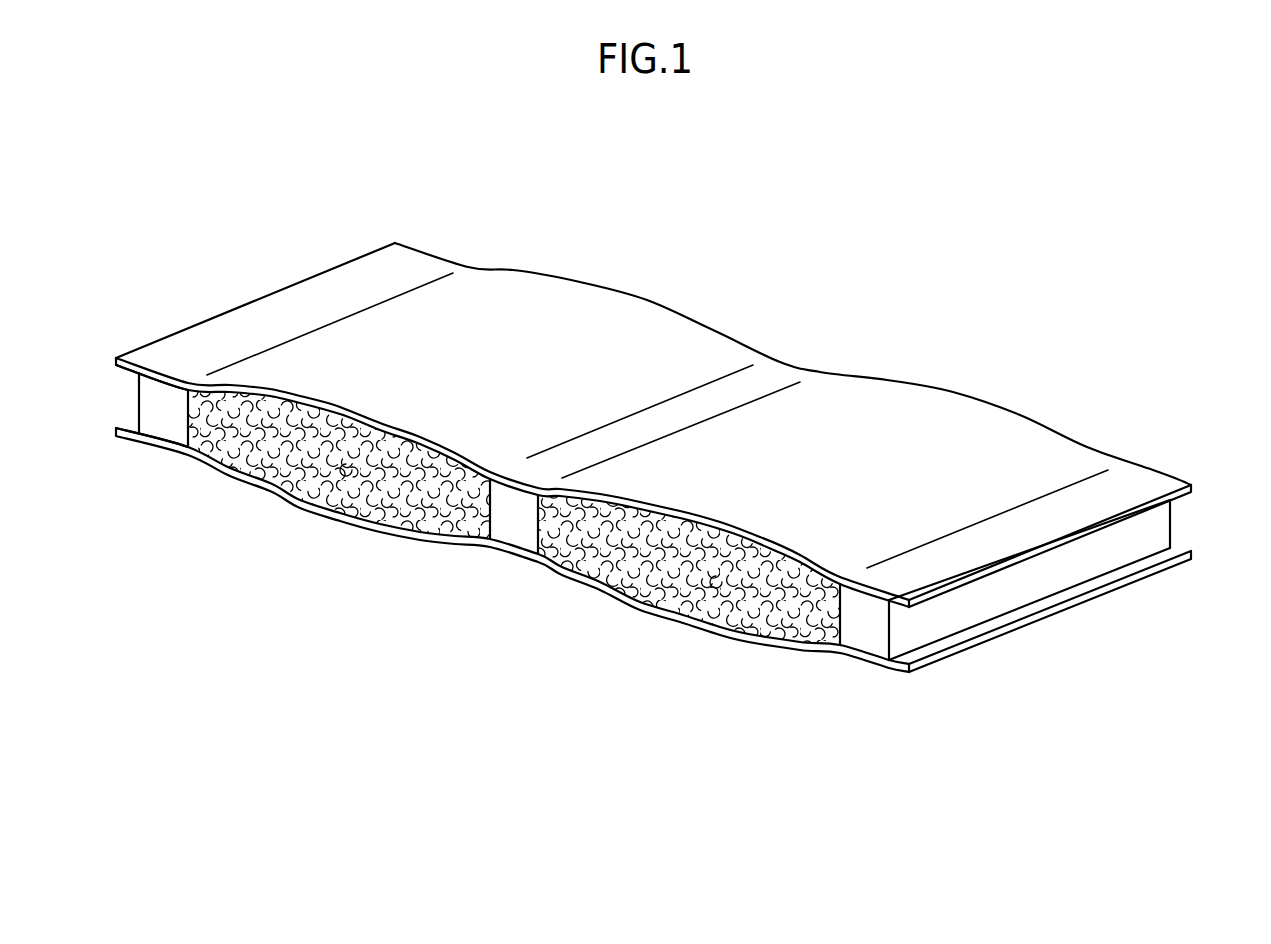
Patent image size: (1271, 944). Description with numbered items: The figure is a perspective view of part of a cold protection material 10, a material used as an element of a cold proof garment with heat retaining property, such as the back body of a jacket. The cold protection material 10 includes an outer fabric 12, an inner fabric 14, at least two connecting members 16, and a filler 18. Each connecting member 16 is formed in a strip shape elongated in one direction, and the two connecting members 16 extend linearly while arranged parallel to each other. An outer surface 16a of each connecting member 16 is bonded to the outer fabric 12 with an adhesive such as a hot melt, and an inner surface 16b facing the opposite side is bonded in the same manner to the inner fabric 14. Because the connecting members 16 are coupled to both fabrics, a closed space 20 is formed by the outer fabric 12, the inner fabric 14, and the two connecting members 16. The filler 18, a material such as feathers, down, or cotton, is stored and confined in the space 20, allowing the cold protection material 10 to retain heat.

The cold protection material 10 is at (473, 236).
The outer fabric 12 is at (883, 422).
The inner fabric 14 is at (880, 672).
The connecting member 16 is at (157, 420).
The outer surface 16a is at (165, 370).
The inner surface 16b is at (172, 443).
The filler 18 is at (293, 457).
The space 20 is at (340, 486).